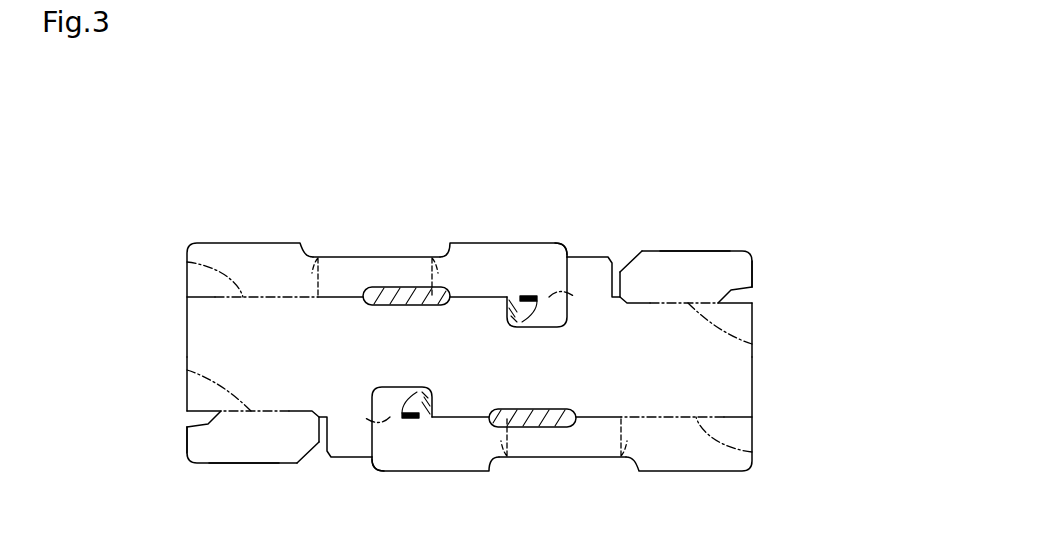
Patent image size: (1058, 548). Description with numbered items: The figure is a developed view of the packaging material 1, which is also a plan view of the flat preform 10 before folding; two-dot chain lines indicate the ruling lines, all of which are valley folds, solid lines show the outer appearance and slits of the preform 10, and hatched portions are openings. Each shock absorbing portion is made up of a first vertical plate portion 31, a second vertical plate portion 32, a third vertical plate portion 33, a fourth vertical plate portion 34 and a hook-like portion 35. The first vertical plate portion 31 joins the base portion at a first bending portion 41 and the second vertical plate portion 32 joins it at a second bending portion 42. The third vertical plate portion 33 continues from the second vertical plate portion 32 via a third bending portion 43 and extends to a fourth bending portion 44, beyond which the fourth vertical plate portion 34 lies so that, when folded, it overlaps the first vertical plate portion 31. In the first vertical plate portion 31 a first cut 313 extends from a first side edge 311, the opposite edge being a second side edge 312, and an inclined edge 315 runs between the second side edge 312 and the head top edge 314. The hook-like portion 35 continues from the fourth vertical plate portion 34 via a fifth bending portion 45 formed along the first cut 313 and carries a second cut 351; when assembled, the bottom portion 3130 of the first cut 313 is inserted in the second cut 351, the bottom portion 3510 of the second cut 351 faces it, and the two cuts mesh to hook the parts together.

The packaging material 1 is at (232, 347).
The preform 10 is at (743, 151).
The first vertical plate portion 31 is at (707, 268).
The second vertical plate portion 32 is at (253, 260).
The third vertical plate portion 33 is at (375, 272).
The fourth vertical plate portion 34 is at (495, 272).
The hook-like portion 35 is at (542, 318).
The first bending portion 41 is at (752, 344).
The second bending portion 42 is at (187, 262).
The third bending portion 43 is at (318, 258).
The fourth bending portion 44 is at (432, 258).
The fifth bending portion 45 is at (575, 297).
The first side edge 311 is at (752, 262).
The second side edge 312 is at (616, 274).
The first cut 313 is at (733, 290).
The head top edge 314 is at (678, 250).
The inclined edge 315 is at (629, 263).
The second cut 351 is at (518, 301).
The bottom portion of the first cut 3130 is at (716, 304).
The bottom portion of the second cut 3510 is at (546, 297).